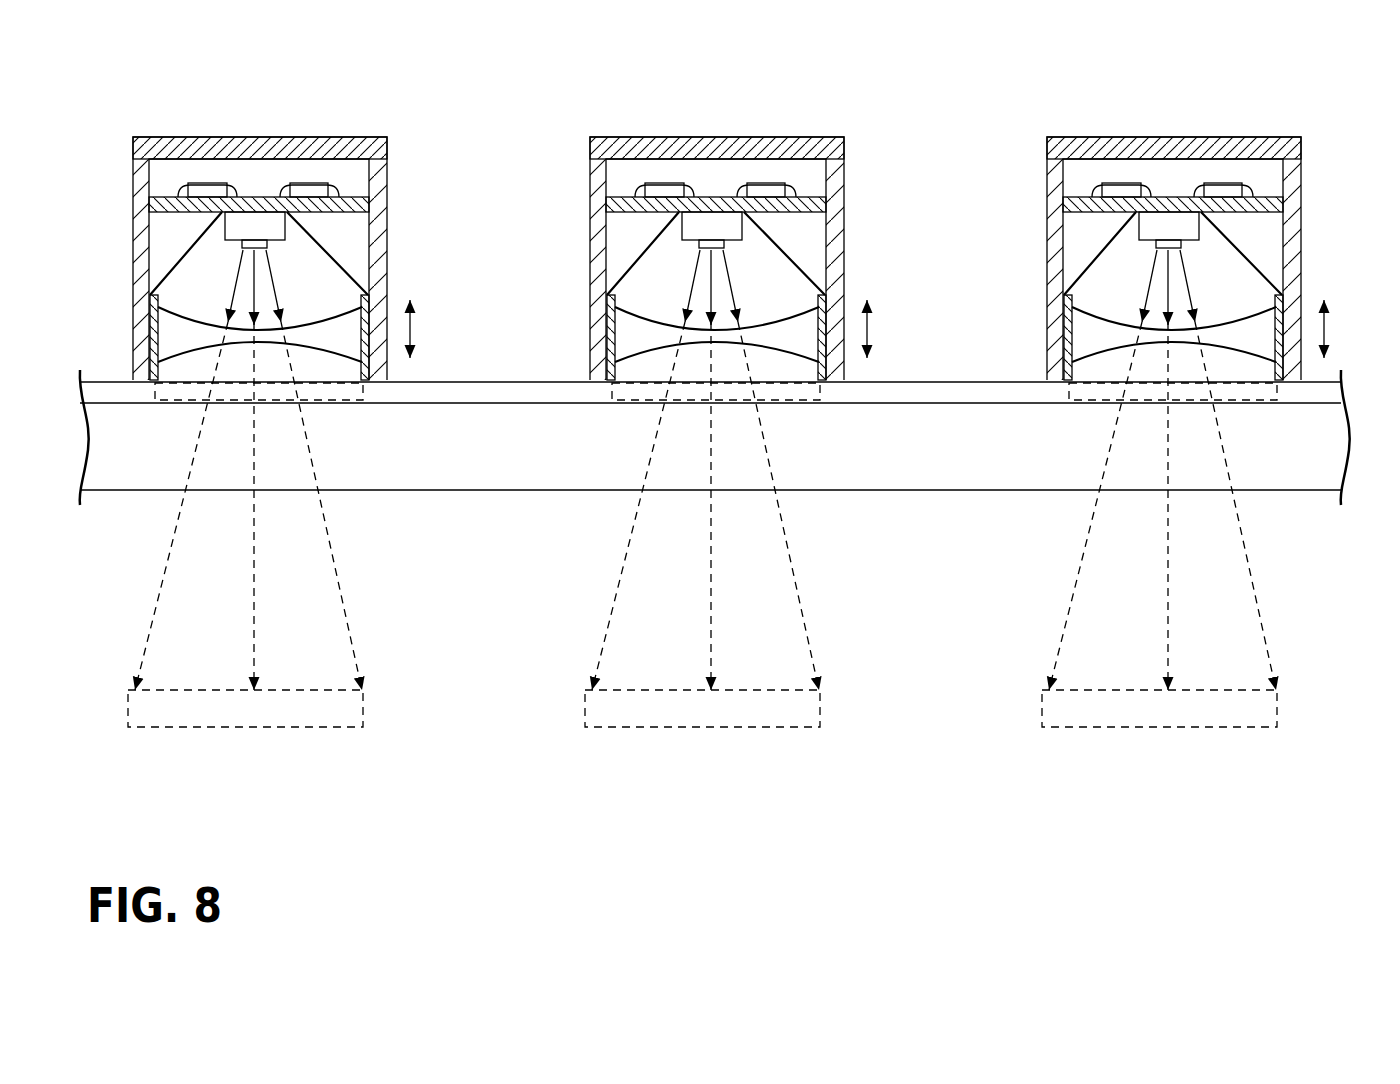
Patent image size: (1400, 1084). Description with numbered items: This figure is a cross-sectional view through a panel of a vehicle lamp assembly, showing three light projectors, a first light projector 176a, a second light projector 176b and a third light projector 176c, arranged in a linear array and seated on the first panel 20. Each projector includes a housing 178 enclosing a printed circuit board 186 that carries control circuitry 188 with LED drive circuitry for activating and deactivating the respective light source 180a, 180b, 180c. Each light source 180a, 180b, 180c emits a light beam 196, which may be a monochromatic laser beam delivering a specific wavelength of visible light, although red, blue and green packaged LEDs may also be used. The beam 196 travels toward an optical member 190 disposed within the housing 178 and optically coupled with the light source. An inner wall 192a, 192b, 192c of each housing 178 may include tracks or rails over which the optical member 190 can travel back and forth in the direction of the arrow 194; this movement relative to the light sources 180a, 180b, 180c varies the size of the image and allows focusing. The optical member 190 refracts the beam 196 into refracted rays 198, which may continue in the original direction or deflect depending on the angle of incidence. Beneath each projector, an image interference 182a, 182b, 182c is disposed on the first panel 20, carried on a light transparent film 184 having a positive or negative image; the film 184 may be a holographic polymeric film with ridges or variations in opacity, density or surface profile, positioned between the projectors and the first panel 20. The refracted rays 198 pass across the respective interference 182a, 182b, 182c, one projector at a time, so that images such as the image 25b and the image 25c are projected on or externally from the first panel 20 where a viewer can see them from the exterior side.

The first panel 20 is at (132, 457).
The image 25c is at (228, 727).
The image 25b is at (702, 736).
The third light projector 176c is at (168, 136).
The second light projector 176b is at (717, 215).
The first light projector 176a is at (1174, 215).
The housing 178 is at (343, 137).
The light source 180c is at (261, 222).
The light source 180b is at (733, 149).
The light source 180a is at (1190, 149).
The image interference 182c is at (233, 402).
The image interference 182b is at (716, 490).
The image interference 182a is at (1173, 490).
The light transparent film 184 is at (476, 388).
The printed circuit board 186 is at (165, 205).
The control circuitry 188 is at (205, 187).
The optical member 190 is at (178, 340).
The inner wall 192c is at (153, 308).
The inner wall 192b is at (668, 319).
The inner wall 192a is at (1125, 319).
The arrow 194 is at (413, 333).
The light beam 196 is at (254, 273).
The refracted rays 198 is at (156, 603).